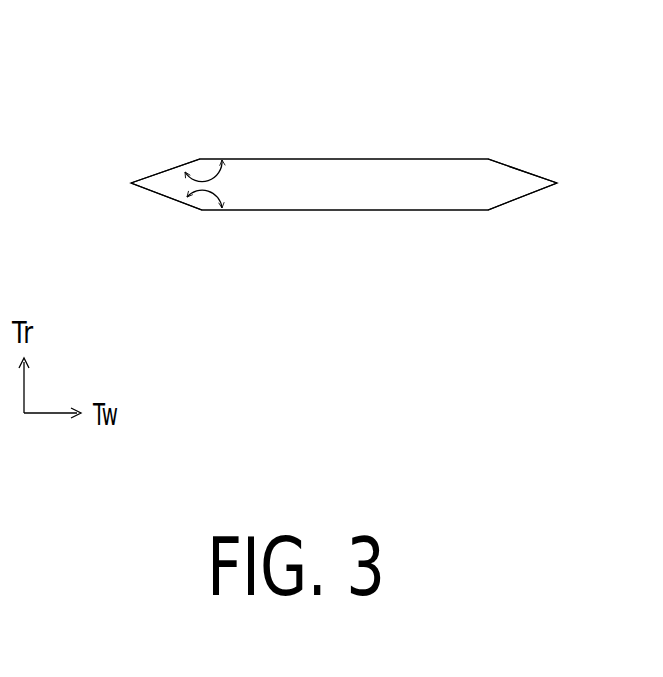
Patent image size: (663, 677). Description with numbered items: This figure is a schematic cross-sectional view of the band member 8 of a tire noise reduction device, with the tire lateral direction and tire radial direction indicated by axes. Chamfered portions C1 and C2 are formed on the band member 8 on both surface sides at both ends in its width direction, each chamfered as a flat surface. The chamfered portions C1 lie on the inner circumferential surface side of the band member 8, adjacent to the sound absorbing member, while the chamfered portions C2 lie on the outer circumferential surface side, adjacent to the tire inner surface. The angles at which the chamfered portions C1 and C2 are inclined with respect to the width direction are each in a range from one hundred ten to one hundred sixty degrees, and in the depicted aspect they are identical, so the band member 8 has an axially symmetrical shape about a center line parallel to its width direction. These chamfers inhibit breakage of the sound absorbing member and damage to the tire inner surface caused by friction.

The band member 8 is at (385, 190).
The chamfered portion C1 is at (165, 171).
The chamfered portion C2 is at (172, 199).